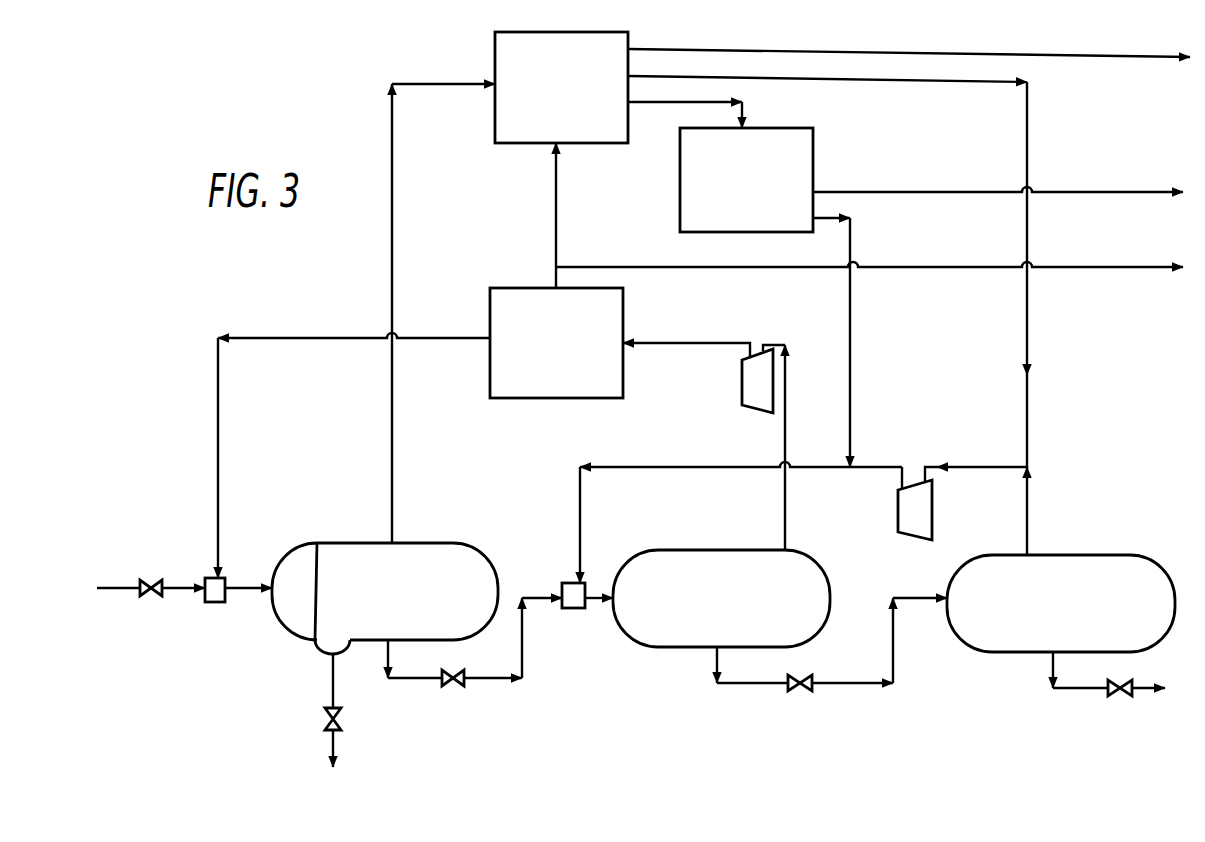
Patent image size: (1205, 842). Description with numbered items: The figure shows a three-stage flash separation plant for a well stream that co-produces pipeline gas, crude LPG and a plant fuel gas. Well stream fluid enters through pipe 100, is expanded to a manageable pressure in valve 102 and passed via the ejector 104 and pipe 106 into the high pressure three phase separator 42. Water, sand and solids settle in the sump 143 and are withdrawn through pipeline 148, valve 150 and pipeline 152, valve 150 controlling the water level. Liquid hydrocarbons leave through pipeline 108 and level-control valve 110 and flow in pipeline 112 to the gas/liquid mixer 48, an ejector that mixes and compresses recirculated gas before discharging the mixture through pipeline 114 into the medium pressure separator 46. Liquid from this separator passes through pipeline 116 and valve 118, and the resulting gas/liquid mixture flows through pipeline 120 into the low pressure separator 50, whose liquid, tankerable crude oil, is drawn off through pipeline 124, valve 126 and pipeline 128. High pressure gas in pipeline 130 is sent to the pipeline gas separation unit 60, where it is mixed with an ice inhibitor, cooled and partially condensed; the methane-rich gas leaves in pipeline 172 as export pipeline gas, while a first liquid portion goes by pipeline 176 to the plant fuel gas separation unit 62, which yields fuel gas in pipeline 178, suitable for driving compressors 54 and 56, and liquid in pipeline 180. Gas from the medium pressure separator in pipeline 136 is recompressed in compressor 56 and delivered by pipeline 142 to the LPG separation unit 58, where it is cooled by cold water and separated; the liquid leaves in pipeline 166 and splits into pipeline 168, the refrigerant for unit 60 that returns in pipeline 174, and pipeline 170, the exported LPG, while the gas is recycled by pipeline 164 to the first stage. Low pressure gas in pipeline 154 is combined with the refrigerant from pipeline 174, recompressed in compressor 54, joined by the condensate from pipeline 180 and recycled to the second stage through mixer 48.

The high pressure three phase separator 42 is at (339, 543).
The medium pressure separator 46 is at (670, 550).
The gas/liquid mixer 48 is at (565, 583).
The low pressure separator 50 is at (1083, 555).
The gas compressor 54 is at (898, 512).
The gas compressor 56 is at (742, 382).
The LPG separation unit 58 is at (573, 402).
The pipeline gas separation unit 60 is at (495, 128).
The plant fuel gas separation unit 62 is at (680, 180).
The pipe 100 is at (108, 585).
The valve 102 is at (148, 577).
The ejector 104 is at (203, 578).
The pipe 106 is at (240, 581).
The pipeline 108 is at (413, 682).
The valve 110 is at (455, 686).
The pipeline 112 is at (493, 684).
The pipeline 114 is at (600, 606).
The pipeline 116 is at (743, 688).
The valve 118 is at (797, 690).
The pipeline 120 is at (861, 690).
The pipeline 124 is at (1071, 692).
The valve 126 is at (1121, 692).
The pipeline 128 is at (1145, 692).
The pipeline 130 is at (392, 443).
The pipeline 136 is at (785, 512).
The pipeline 142 is at (678, 343).
The sump 143 is at (317, 652).
The pipeline 148 is at (333, 689).
The valve 150 is at (322, 715).
The pipeline 152 is at (326, 744).
The pipeline 154 is at (1028, 507).
The pipeline 164 is at (314, 336).
The pipeline 166 is at (556, 270).
The pipeline 168 is at (556, 197).
The pipeline 170 is at (755, 271).
The pipeline 172 is at (744, 50).
The pipeline 174 is at (794, 78).
The pipeline 176 is at (680, 105).
The pipeline 178 is at (951, 190).
The pipeline 180 is at (862, 316).